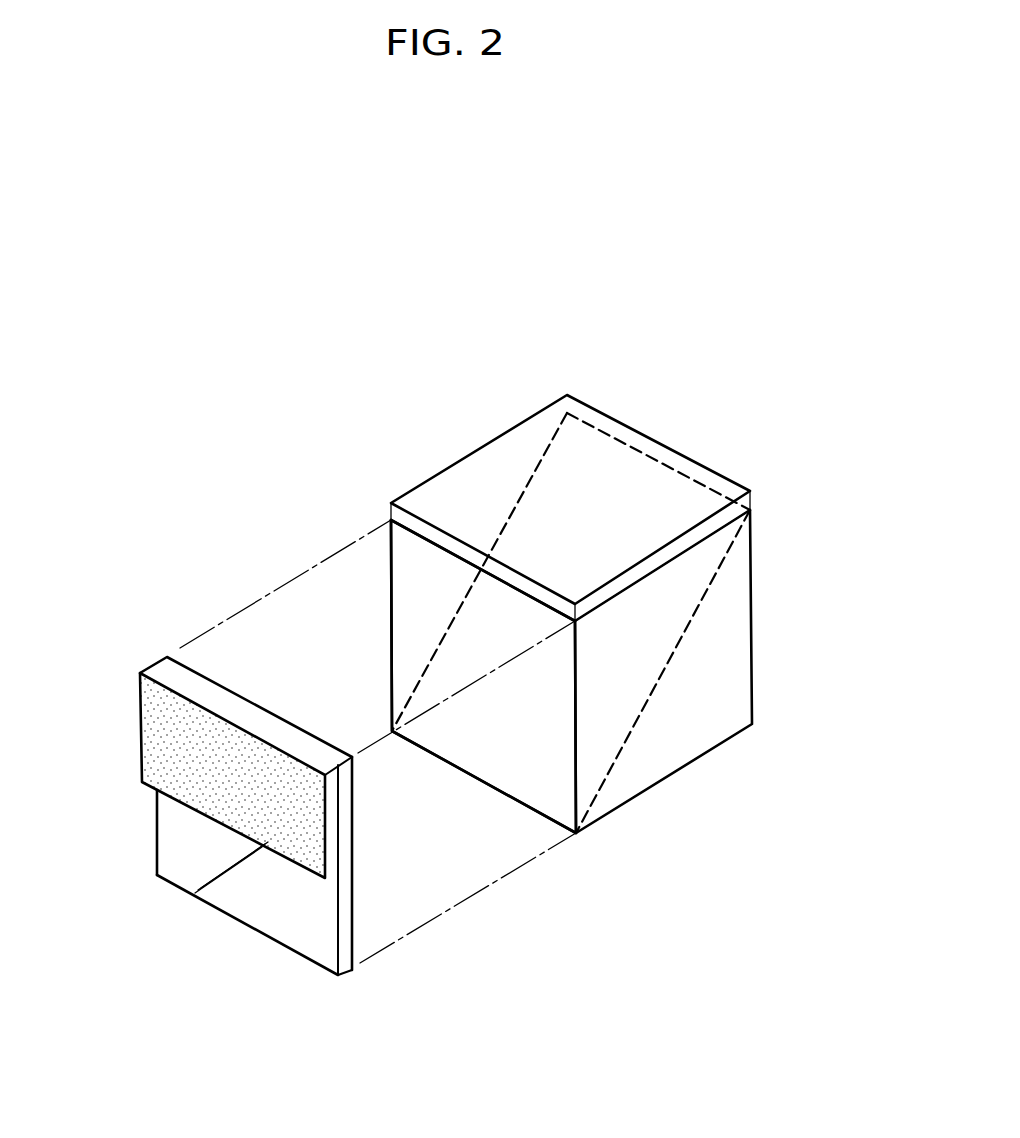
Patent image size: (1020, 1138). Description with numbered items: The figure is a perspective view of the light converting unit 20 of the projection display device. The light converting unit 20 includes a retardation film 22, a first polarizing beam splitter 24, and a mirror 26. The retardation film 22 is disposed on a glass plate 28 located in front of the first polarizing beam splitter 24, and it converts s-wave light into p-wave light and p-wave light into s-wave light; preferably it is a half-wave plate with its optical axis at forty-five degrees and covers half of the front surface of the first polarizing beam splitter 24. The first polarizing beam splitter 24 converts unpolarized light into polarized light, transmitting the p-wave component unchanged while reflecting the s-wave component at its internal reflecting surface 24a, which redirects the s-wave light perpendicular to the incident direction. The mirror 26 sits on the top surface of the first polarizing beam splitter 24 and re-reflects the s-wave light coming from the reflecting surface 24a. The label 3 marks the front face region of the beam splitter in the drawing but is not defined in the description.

The light converting unit 20 is at (658, 372).
The retardation film 22 is at (153, 733).
The first polarizing beam splitter 24 is at (737, 643).
The reflecting surface 24a is at (628, 635).
The mirror 26 is at (390, 520).
The glass plate 28 is at (163, 659).
The incident face 3 is at (551, 690).